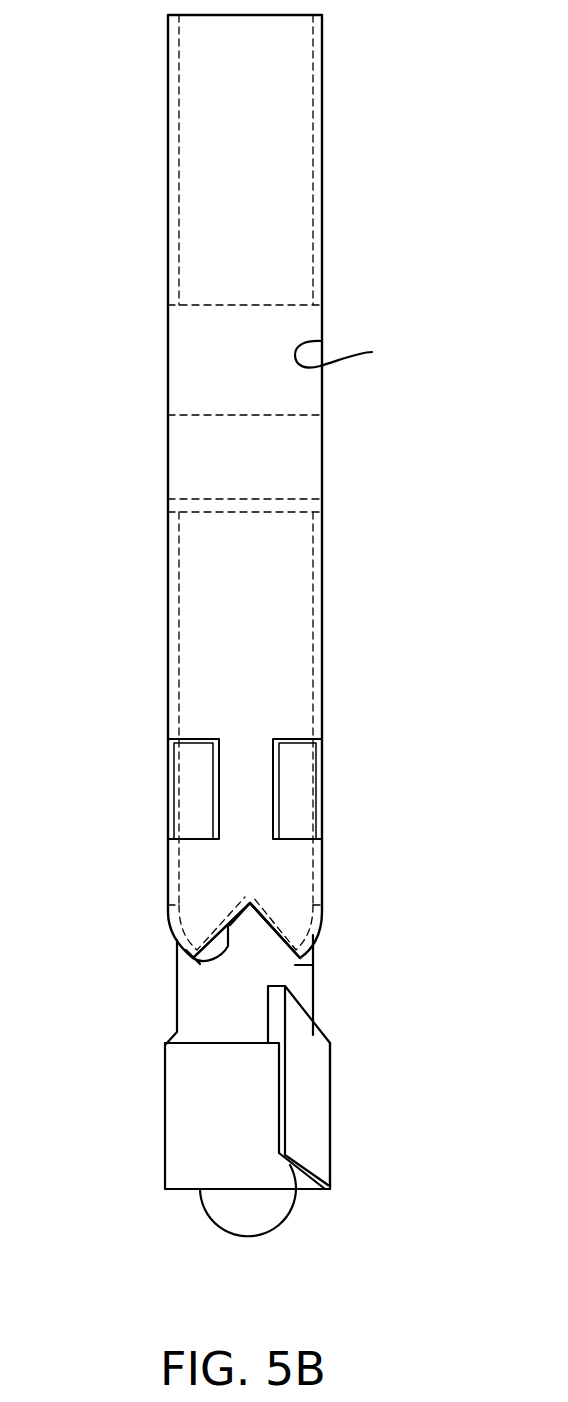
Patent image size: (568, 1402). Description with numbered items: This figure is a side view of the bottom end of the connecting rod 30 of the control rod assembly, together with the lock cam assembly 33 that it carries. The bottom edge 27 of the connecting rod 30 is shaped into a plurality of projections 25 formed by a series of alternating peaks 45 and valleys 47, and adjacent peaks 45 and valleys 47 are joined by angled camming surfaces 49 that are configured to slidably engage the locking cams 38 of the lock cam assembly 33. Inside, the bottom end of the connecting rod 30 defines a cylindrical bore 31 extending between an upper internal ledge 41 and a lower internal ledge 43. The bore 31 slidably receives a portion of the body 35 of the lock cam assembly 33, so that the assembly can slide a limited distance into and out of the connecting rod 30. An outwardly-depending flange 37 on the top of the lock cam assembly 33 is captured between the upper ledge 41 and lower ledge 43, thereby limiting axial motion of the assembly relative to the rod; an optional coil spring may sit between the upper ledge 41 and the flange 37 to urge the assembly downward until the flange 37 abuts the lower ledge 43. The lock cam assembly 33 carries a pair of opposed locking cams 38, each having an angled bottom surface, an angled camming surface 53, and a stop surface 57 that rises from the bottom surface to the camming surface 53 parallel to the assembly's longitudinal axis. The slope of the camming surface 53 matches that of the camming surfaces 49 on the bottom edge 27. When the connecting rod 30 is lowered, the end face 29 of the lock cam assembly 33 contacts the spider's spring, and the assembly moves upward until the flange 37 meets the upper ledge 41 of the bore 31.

The connecting rod 30 is at (128, 201).
The upper internal ledge 41 is at (315, 308).
The cylindrical bore 31 is at (372, 352).
The outwardly-depending flange 37 is at (270, 458).
The lower internal ledge 43 is at (178, 518).
The body 35 is at (280, 618).
The valley 47 is at (250, 903).
The bottom edge 27 is at (285, 900).
The angled camming surface 49 is at (193, 958).
The peak 45 is at (305, 965).
The projection 25 is at (196, 986).
The angled camming surface 53 is at (298, 1005).
The lock cam assembly 33 is at (164, 1216).
The stop surface 57 is at (285, 1113).
The locking cam 38 is at (305, 1113).
The end face 29 is at (313, 1192).